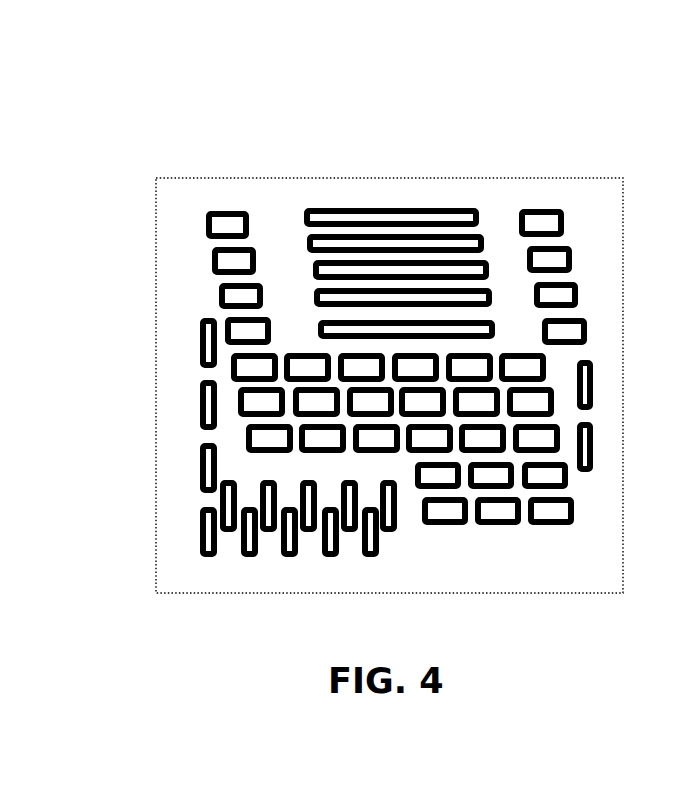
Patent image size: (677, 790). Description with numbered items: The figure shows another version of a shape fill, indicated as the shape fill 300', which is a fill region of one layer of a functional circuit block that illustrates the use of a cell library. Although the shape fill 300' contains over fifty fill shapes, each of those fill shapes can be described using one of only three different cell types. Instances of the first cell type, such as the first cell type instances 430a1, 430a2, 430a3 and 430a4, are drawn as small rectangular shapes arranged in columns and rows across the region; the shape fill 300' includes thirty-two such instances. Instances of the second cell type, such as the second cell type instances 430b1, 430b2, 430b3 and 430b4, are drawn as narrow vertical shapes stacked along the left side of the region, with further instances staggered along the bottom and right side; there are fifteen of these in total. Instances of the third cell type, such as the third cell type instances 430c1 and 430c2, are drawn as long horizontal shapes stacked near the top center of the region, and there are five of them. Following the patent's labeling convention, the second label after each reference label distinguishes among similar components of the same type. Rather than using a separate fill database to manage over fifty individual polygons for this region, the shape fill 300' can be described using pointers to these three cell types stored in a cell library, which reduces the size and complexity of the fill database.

The shape fill 300' is at (409, 324).
The first cell type instance 430a1 is at (206, 229).
The first cell type instance 430a2 is at (212, 264).
The first cell type instance 430a3 is at (219, 297).
The first cell type instance 430a4 is at (535, 209).
The second cell type instance 430b1 is at (200, 341).
The second cell type instance 430b2 is at (200, 397).
The second cell type instance 430b3 is at (200, 469).
The second cell type instance 430b4 is at (200, 532).
The third cell type instance 430c1 is at (328, 211).
The third cell type instance 430c2 is at (307, 243).